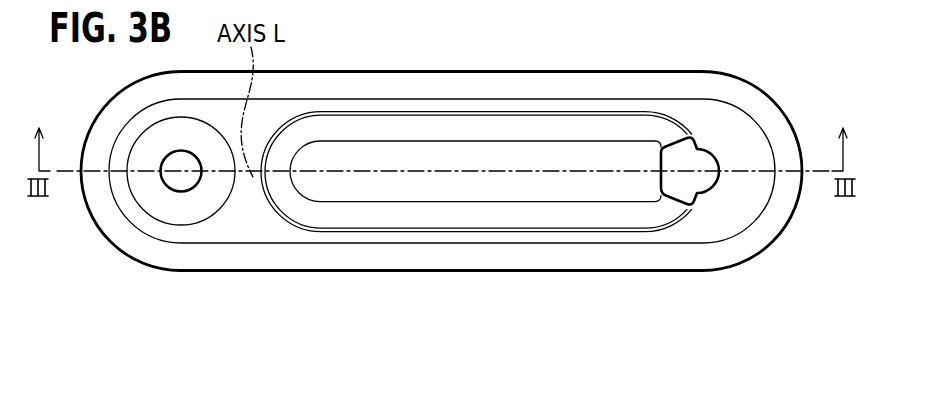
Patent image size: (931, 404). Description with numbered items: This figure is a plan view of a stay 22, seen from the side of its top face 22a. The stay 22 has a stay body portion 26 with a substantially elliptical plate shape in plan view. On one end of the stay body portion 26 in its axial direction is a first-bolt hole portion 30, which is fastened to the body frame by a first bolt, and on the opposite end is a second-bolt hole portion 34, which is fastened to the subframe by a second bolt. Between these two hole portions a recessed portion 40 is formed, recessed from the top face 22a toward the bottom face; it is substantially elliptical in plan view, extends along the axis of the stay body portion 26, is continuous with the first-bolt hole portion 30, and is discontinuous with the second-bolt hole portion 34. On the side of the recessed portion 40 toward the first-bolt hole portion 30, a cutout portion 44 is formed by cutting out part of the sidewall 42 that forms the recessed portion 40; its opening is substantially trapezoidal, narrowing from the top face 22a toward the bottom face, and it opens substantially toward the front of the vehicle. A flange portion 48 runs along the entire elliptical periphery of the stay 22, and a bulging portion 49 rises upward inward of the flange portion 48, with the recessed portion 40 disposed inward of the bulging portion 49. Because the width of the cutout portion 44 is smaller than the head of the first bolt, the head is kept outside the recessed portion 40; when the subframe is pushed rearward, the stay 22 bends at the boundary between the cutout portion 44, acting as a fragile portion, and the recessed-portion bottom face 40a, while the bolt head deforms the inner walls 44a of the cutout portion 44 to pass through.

The stay 22 is at (588, 31).
The top face 22a is at (735, 138).
The stay body portion 26 is at (441, 283).
The first-bolt hole portion 30 is at (730, 177).
The second-bolt hole portion 34 is at (172, 178).
The recessed portion 40 is at (510, 128).
The recessed-portion bottom face 40a is at (647, 172).
The sidewall 42 is at (683, 132).
The cutout portion 44 is at (682, 185).
The inner walls 44a is at (707, 143).
The flange portion 48 is at (348, 258).
The bulging portion 49 is at (765, 225).